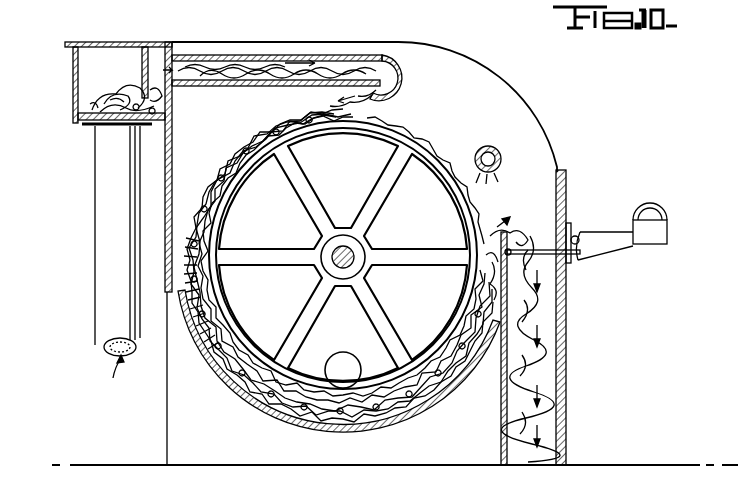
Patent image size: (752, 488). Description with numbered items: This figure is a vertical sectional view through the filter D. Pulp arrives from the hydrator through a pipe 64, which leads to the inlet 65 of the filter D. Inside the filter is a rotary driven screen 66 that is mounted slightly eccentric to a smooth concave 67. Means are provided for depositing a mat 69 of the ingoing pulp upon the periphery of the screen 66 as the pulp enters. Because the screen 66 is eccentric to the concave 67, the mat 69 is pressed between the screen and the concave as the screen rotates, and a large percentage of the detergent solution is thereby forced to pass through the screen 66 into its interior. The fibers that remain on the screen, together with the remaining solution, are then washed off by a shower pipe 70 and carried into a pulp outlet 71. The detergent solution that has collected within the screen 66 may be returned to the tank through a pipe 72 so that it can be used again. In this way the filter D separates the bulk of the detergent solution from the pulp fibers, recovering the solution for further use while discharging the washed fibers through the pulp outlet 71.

The pipe 64 is at (100, 178).
The inlet 65 is at (82, 108).
The rotary driven screen 66 is at (462, 128).
The smooth concave 67 is at (244, 410).
The mat 69 is at (245, 150).
The shower pipe 70 is at (492, 153).
The pulp outlet 71 is at (550, 380).
The pipe 72 is at (345, 378).
The filter D is at (530, 161).